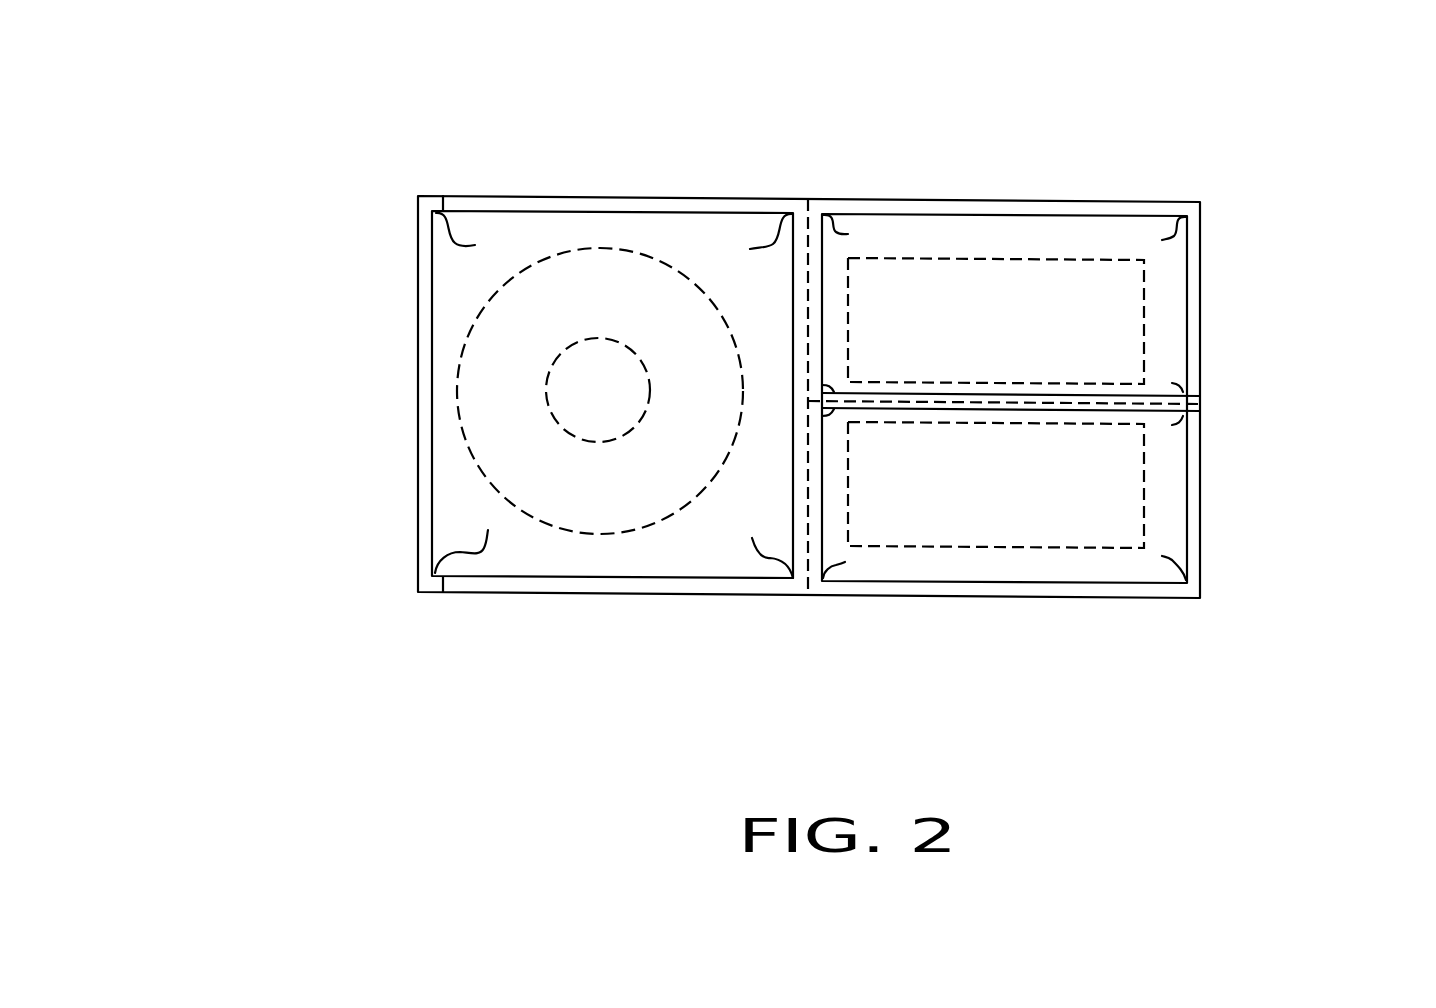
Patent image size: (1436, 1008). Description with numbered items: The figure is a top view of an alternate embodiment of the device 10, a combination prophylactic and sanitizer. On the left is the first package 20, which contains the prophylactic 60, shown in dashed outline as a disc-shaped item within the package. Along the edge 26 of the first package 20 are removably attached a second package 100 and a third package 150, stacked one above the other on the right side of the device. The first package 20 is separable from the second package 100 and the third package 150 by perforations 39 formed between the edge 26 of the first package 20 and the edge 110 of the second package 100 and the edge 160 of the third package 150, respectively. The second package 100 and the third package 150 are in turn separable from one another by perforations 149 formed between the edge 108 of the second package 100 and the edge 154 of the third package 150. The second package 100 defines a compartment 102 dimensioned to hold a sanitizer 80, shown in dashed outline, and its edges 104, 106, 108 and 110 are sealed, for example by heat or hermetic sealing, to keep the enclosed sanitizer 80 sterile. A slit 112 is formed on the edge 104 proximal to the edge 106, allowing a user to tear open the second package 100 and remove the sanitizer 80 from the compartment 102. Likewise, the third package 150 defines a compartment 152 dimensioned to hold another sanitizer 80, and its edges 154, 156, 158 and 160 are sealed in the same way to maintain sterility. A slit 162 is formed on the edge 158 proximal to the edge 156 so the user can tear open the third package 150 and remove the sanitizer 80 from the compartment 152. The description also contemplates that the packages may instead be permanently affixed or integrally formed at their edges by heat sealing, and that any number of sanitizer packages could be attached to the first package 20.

The device 10 is at (322, 304).
The first package 20 is at (503, 232).
The edge 26 is at (800, 472).
The perforations 39 is at (793, 214).
The prophylactic 60 is at (617, 277).
The sanitizer 80 is at (1005, 290).
The second package 100 is at (953, 232).
The compartment 102 is at (1124, 232).
The edge 104 is at (1103, 210).
The edge 106 is at (1195, 273).
The edge 108 is at (1153, 400).
The edge 110 is at (818, 258).
The slit 112 is at (1158, 203).
The perforations 149 is at (918, 402).
The third package 150 is at (1088, 572).
The compartment 152 is at (1172, 525).
The edge 154 is at (1143, 410).
The edge 156 is at (1193, 478).
The edge 158 is at (973, 592).
The edge 160 is at (820, 562).
The slit 162 is at (1152, 585).